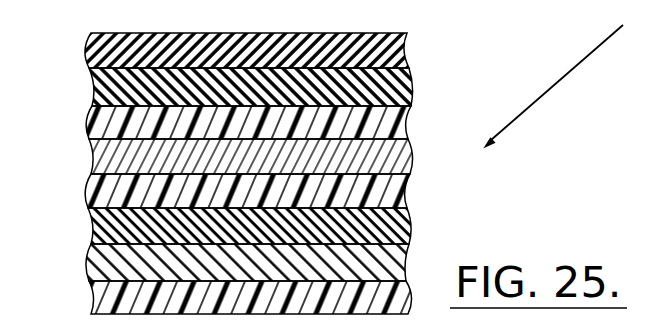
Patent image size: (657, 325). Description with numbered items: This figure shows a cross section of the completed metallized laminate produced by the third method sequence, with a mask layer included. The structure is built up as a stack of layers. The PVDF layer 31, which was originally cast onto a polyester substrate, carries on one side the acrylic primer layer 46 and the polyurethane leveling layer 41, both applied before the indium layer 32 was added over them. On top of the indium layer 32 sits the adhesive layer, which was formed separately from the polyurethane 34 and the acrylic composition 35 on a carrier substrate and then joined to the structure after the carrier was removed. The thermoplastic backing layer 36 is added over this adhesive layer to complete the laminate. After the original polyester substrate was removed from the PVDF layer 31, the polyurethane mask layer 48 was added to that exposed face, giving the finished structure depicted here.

The thermoplastic backing layer 36 is at (88, 56).
The acrylic composition 35 is at (88, 92).
The polyurethane 34 is at (88, 128).
The indium layer 32 is at (88, 158).
The polyurethane leveling layer 41 is at (88, 192).
The acrylic primer layer 46 is at (88, 220).
The PVDF layer 31 is at (88, 258).
The polyurethane mask layer 48 is at (88, 300).